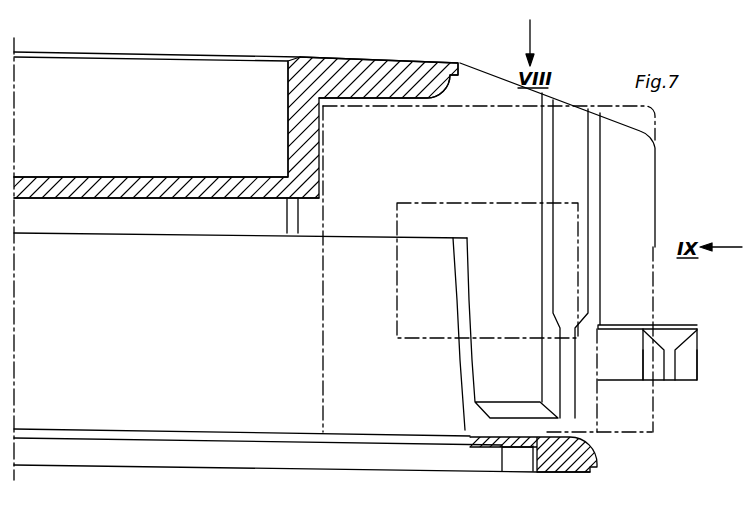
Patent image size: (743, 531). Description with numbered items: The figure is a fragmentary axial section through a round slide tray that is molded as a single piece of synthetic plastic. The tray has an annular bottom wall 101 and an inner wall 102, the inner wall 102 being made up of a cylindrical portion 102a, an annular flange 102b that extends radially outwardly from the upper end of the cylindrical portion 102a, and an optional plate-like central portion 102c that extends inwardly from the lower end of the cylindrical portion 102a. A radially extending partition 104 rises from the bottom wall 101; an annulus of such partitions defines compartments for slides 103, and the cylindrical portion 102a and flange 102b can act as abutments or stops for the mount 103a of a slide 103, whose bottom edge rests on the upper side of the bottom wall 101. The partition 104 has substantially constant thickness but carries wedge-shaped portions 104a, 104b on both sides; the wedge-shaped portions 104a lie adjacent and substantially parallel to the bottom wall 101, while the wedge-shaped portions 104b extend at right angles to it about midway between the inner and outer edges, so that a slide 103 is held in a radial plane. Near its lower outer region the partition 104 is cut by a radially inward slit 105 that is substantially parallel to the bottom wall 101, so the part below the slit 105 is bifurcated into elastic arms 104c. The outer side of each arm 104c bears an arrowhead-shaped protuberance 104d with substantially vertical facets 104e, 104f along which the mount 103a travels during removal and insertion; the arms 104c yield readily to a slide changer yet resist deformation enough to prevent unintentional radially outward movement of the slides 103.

The annular bottom wall 101 is at (487, 462).
The inner wall 102 is at (268, 78).
The cylindrical portion 102a is at (292, 125).
The annular flange 102b is at (377, 78).
The plate-like central portion 102c is at (200, 178).
The slide 103 is at (316, 322).
The mount 103a is at (456, 162).
The partition 104 is at (496, 56).
The wedge-shaped portion 104a is at (512, 410).
The wedge-shaped portion 104b is at (572, 125).
The elastic arm 104c is at (620, 343).
The arrowhead-shaped protuberance 104d is at (670, 348).
The vertical facet 104e is at (642, 365).
The vertical facet 104f is at (687, 362).
The slit 105 is at (697, 327).